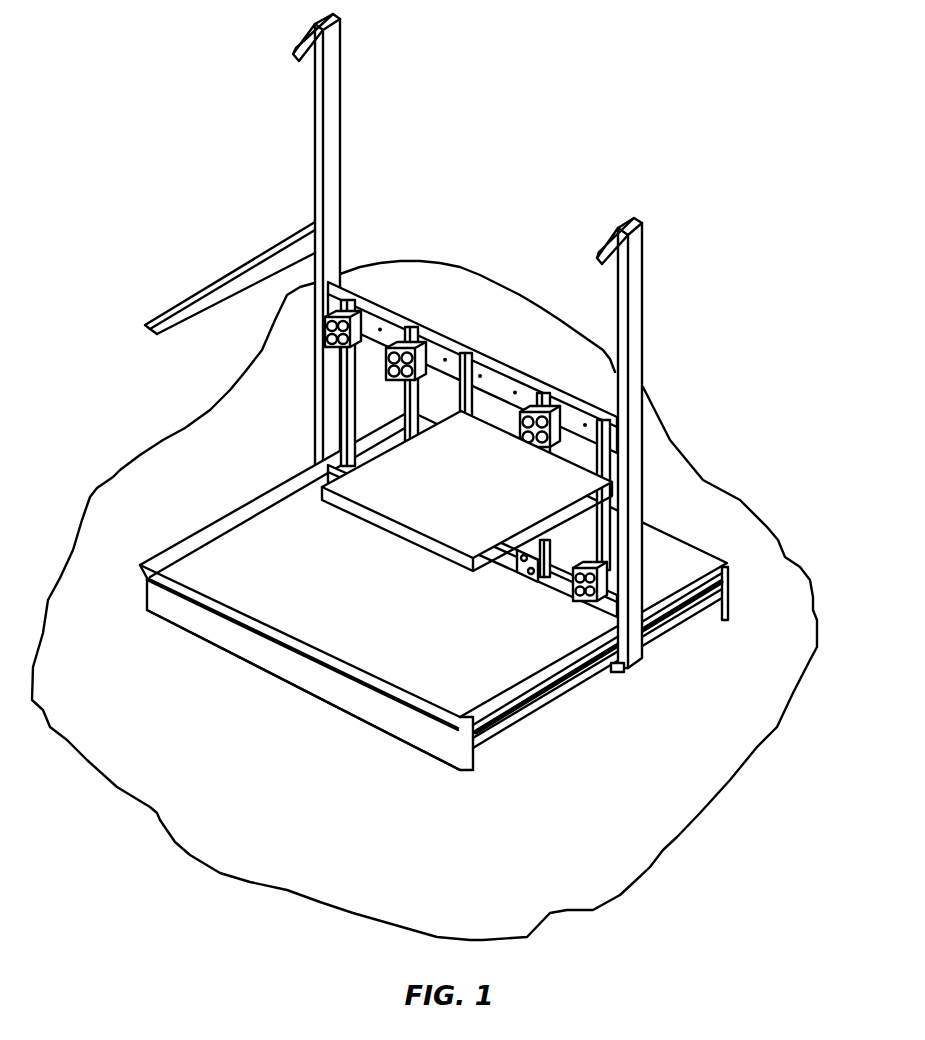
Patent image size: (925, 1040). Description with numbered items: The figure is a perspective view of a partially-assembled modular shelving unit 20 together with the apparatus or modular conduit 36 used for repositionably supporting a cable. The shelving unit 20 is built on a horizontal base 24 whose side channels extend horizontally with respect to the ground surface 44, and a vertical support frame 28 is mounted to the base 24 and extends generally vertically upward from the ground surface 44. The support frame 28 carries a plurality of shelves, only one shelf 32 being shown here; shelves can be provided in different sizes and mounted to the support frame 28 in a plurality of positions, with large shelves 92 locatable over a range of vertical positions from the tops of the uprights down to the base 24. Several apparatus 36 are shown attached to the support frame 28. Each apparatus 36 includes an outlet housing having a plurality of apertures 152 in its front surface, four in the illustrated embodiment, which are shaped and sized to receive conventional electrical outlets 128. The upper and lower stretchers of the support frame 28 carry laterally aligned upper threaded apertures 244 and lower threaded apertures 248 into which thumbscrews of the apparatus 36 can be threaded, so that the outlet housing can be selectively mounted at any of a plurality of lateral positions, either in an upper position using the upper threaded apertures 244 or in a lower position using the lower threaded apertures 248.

The modular shelving unit 20 is at (672, 148).
The horizontal base 24 is at (538, 714).
The vertical support frame 28 is at (656, 456).
The shelf 32 is at (405, 535).
The apparatus or modular conduit 36 is at (380, 384).
The ground surface 44 is at (777, 567).
The large shelves 92 is at (307, 653).
The electrical outlets 128 is at (392, 342).
The apertures 152 is at (533, 407).
The upper threaded apertures 244 is at (450, 340).
The lower threaded apertures 248 is at (523, 568).